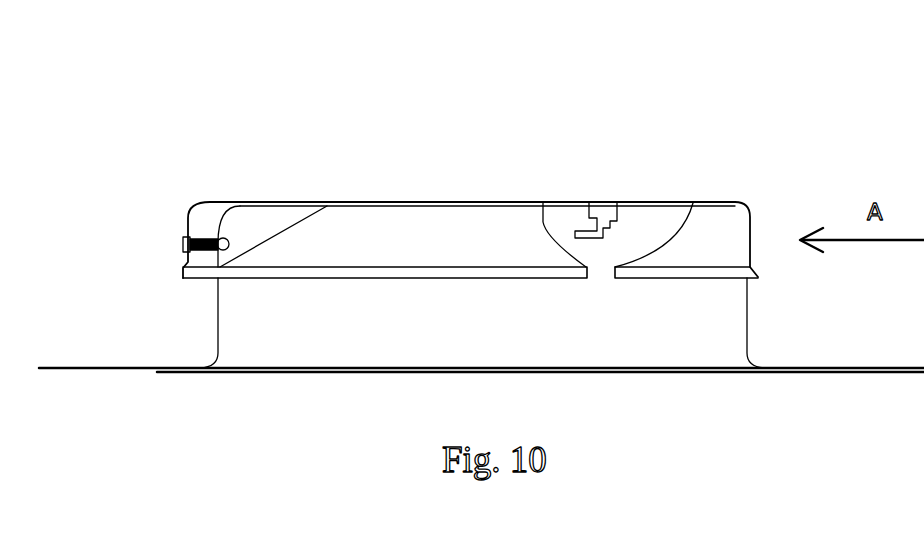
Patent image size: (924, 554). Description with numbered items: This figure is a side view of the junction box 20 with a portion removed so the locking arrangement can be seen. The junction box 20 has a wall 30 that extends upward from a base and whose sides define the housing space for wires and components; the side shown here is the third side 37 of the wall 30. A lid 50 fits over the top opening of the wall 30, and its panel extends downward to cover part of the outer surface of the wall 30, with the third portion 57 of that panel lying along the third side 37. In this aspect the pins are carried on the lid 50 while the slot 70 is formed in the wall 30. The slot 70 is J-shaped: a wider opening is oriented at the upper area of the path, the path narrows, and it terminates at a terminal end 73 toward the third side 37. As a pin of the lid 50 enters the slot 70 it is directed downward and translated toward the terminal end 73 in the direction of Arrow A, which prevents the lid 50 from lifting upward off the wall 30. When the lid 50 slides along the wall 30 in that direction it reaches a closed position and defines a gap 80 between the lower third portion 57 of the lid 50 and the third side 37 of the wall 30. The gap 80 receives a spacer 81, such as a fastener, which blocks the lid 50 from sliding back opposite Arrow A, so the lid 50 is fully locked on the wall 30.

The junction box 20 is at (813, 115).
The wall 30 is at (751, 325).
The third side 37 is at (217, 323).
The lid 50 is at (490, 171).
The third portion 57 is at (188, 228).
The slot 70 is at (602, 208).
The terminal end 73 is at (571, 230).
The gap 80 is at (211, 221).
The spacer 81 is at (206, 250).